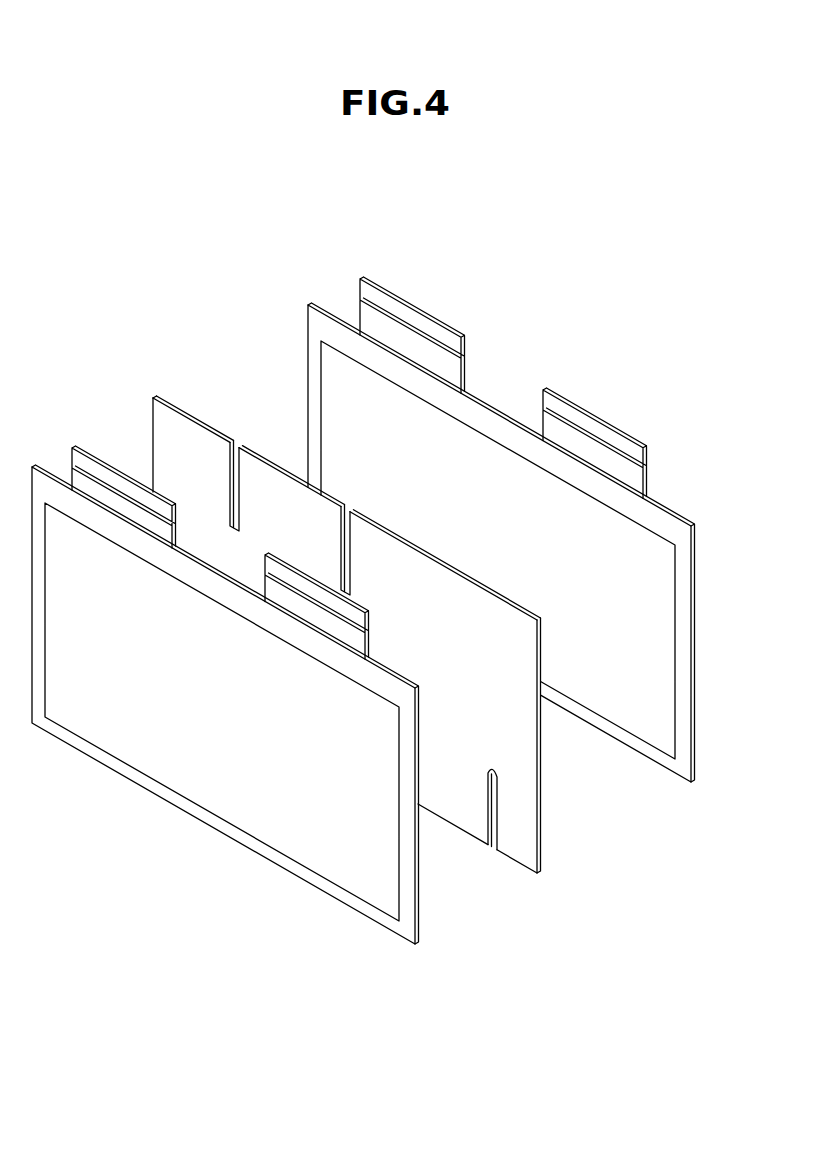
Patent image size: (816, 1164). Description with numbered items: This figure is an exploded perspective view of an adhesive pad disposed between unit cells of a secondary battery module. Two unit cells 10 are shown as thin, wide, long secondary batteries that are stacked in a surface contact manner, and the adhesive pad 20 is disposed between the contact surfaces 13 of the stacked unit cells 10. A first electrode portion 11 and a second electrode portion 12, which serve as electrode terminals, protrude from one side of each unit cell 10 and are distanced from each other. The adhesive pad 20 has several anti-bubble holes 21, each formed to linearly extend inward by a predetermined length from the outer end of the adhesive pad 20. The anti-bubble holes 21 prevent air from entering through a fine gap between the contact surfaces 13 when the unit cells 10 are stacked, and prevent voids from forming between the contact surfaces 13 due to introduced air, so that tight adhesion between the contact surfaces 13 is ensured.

The unit cell 10 is at (423, 953).
The first electrode portion 11 is at (600, 432).
The second electrode portion 12 is at (400, 306).
The contact surface 13 is at (235, 808).
The adhesive pad 20 is at (388, 688).
The anti-bubble hole 21 is at (490, 804).